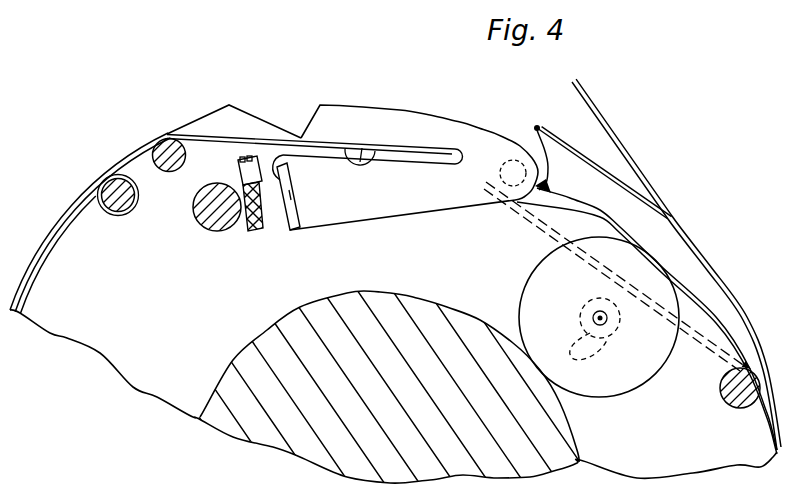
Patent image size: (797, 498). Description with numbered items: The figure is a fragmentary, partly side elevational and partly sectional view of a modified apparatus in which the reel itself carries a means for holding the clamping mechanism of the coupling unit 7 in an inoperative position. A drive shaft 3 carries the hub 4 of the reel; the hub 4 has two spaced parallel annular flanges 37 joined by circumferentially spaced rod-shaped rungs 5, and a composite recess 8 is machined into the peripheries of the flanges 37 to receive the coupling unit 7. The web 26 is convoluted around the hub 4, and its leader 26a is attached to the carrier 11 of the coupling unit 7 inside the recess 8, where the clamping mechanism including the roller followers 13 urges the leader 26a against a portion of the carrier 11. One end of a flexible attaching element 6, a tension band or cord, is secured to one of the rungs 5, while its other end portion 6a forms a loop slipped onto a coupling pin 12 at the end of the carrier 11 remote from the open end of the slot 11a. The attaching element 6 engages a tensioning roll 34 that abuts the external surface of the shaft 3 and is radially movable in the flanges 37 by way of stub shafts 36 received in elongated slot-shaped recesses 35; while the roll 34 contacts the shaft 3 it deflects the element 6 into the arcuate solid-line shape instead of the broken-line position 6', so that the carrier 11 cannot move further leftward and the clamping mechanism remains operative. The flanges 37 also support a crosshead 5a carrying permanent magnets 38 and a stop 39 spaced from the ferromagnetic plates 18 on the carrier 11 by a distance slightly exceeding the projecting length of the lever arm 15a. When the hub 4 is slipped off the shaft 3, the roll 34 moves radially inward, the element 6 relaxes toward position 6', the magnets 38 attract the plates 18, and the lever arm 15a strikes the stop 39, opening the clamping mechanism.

The drive shaft 3 is at (241, 360).
The hub 4 is at (82, 347).
The rungs 5 is at (166, 138).
The crosshead 5a is at (194, 203).
The flexible attaching element 6 is at (393, 293).
The broken-line position of attaching element 6' is at (617, 276).
The end portion of attaching element 6a is at (553, 195).
The coupling unit 7 is at (486, 115).
The composite recess 8 is at (263, 110).
The carrier 11 is at (448, 201).
The slot 11a is at (397, 160).
The coupling pin 12 is at (518, 157).
The roller followers 13 is at (362, 148).
The lever arm 15a is at (298, 140).
The ferromagnetic plates 18 is at (310, 222).
The web 26 is at (125, 158).
The leader 26a is at (417, 148).
The tensioning roll 34 is at (548, 272).
The slot-shaped recesses 35 is at (602, 353).
The stub shafts 36 is at (592, 318).
The flanges 37 is at (592, 175).
The permanent magnets 38 is at (295, 197).
The stop 39 is at (247, 170).